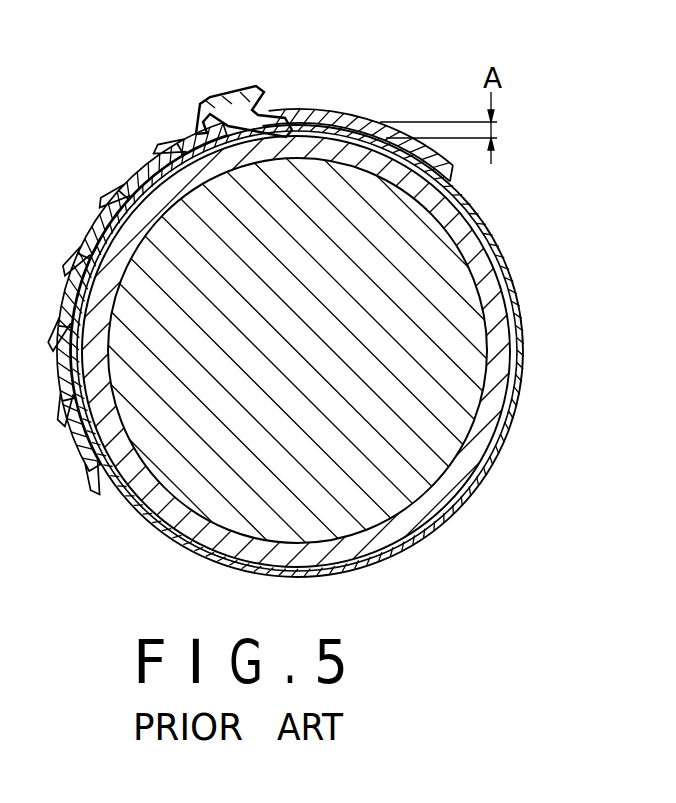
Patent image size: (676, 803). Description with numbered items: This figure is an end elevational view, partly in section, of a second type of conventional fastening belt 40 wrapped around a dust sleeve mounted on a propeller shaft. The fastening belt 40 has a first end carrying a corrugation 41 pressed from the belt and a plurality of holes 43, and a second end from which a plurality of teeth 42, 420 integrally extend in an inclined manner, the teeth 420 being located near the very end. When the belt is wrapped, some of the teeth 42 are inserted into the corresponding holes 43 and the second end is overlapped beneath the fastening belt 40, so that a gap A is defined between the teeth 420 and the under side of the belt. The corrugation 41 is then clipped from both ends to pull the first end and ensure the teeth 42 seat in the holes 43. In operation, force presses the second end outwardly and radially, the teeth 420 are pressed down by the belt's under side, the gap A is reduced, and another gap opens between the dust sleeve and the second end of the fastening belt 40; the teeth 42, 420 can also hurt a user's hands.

The fastening belt 40 is at (540, 236).
The corrugation 41 is at (232, 95).
The teeth 42 is at (168, 150).
The holes 43 is at (108, 208).
The teeth 420 is at (295, 122).